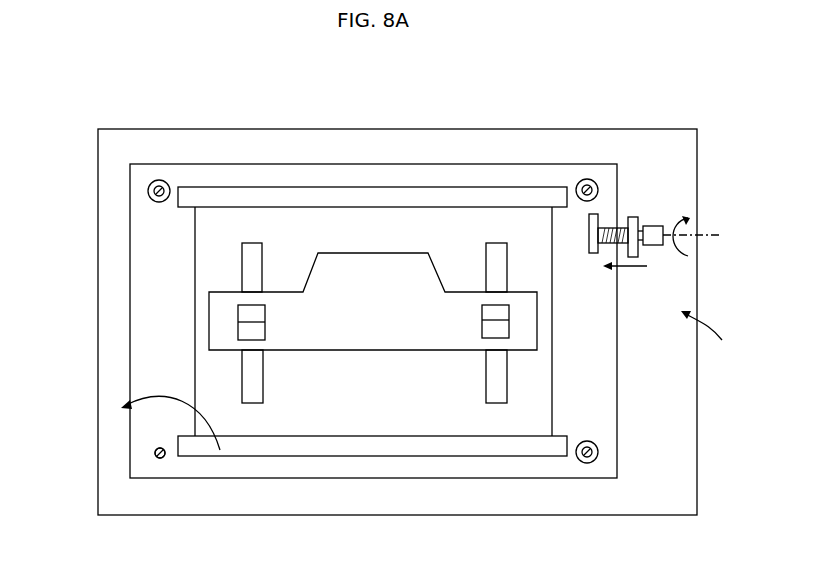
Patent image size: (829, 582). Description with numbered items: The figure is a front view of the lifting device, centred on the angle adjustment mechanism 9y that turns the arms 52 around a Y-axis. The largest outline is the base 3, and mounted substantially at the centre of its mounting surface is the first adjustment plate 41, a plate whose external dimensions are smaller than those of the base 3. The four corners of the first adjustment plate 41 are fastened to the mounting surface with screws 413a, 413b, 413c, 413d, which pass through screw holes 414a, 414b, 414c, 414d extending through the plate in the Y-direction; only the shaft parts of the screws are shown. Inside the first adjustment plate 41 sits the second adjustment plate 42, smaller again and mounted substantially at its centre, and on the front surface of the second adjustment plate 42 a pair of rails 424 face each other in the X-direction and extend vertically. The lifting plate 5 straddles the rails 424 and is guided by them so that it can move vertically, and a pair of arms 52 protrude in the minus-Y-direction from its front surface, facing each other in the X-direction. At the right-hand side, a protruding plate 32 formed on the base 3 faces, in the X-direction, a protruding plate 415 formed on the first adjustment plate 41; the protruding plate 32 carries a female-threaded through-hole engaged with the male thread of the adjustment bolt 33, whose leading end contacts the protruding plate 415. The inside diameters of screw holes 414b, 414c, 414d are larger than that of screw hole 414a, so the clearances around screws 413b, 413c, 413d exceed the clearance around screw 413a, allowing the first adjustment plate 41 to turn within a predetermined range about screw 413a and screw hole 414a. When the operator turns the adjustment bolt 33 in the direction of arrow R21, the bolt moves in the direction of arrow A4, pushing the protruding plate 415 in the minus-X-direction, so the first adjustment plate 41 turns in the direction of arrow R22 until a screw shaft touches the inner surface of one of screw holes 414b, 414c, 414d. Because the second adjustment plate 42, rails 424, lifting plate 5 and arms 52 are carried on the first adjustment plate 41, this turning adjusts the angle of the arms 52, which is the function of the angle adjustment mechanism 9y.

The base 3 is at (366, 128).
The first adjustment plate 41 is at (452, 163).
The second adjustment plate 42 is at (552, 382).
The lifting plate 5 is at (372, 253).
The arms 52 is at (252, 318).
The rails 424 is at (263, 365).
The screw 413a is at (160, 460).
The screw 413b is at (148, 190).
The screw 413c is at (583, 180).
The screw 413d is at (600, 454).
The screw hole 414a is at (166, 458).
The screw hole 414b is at (163, 181).
The screw hole 414c is at (592, 181).
The screw hole 414d is at (592, 441).
The protruding plate 415 is at (594, 213).
The protruding plate 32 is at (633, 217).
The adjustment bolt 33 is at (655, 226).
The arrow R21 is at (688, 256).
The arrow R22 is at (170, 392).
The arrow A4 is at (647, 268).
The angle adjustment mechanism 9y is at (715, 335).